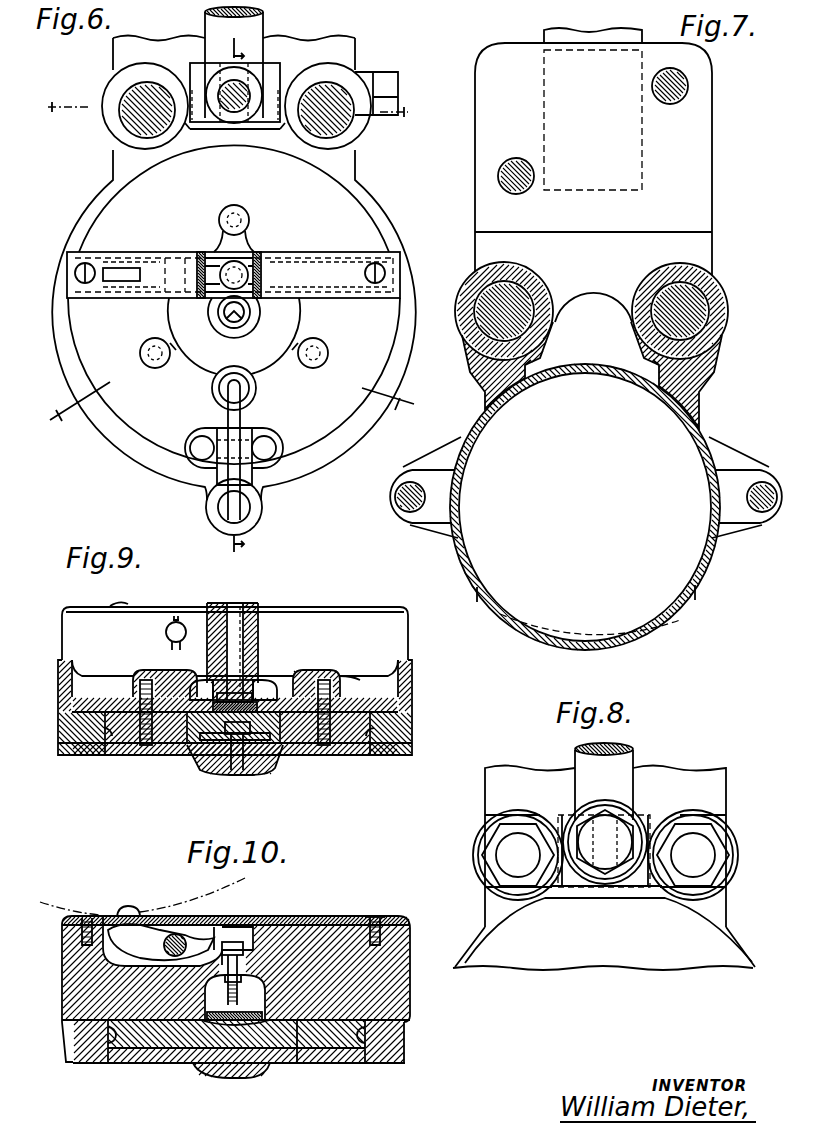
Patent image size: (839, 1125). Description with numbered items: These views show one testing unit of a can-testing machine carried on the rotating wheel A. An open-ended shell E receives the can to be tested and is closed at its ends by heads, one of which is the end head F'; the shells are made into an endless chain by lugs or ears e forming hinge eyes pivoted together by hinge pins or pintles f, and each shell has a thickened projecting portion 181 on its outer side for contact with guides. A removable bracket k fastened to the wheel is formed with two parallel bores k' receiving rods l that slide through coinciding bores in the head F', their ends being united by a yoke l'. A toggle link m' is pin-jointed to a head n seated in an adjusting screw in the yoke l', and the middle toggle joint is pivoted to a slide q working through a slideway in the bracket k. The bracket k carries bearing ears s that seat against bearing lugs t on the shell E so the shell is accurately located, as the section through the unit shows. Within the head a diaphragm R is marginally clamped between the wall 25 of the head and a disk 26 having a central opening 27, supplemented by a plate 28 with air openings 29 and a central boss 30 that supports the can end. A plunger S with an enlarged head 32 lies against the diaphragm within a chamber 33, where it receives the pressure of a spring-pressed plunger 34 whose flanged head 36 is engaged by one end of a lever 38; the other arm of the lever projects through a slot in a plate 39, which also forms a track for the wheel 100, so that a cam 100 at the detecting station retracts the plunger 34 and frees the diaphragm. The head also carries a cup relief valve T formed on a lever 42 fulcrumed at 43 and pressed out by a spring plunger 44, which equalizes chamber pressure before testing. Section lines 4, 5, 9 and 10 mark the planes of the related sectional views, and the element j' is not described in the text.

In FIG. 6, the slide q is at (210, 28).
In FIG. 8, the slide q is at (604, 781).
In FIG. 6, the section line 4 is at (236, 303).
In FIG. 6, the toggle link m' is at (240, 76).
In FIG. 6, the head n is at (243, 73).
In FIG. 6, the end head F' is at (233, 268).
In FIG. 9, the end head F' is at (235, 681).
In FIG. 10, the end head F' is at (246, 989).
In FIG. 8, the end head F' is at (604, 868).
In FIG. 6, the section line 5 is at (227, 110).
In FIG. 6, the rod l is at (133, 106).
In FIG. 7, the rod l is at (606, 311).
In FIG. 8, the rod l is at (605, 855).
In FIG. 6, the bore k' is at (336, 106).
In FIG. 7, the bore k' is at (686, 305).
In FIG. 7, the bracket k is at (508, 305).
In FIG. 6, the lever 38 is at (120, 270).
In FIG. 9, the lever 38 is at (141, 597).
In FIG. 10, the lever 38 is at (140, 916).
In FIG. 6, the spring-pressed plunger 34 is at (238, 268).
In FIG. 10, the spring-pressed plunger 34 is at (237, 940).
In FIG. 6, the plate 39 is at (330, 270).
In FIG. 10, the plate 39 is at (373, 917).
In FIG. 6, the section line 10 is at (73, 273).
In FIG. 6, the plunger S is at (233, 313).
In FIG. 9, the plunger S is at (243, 603).
In FIG. 6, the section line 9 is at (220, 408).
In FIG. 6, the lever 42 is at (226, 412).
In FIG. 6, the relief valve T is at (248, 391).
In FIG. 6, the fulcrum 43 is at (244, 454).
In FIG. 6, the spring plunger 44 is at (246, 509).
In FIG. 7, the wheel A is at (593, 151).
In FIG. 7, the bearing ear s is at (532, 362).
In FIG. 7, the bearing lug t is at (503, 372).
In FIG. 7, the open-ended shell E is at (585, 507).
In FIG. 7, the lug or ear e is at (398, 478).
In FIG. 7, the hinge pin or pintle f is at (422, 491).
In FIG. 7, the thickened projecting portion 181 is at (657, 624).
In FIG. 9, the enlarged head 32 is at (200, 698).
In FIG. 10, the enlarged head 32 is at (267, 990).
In FIG. 9, the chamber 33 is at (265, 688).
In FIG. 9, the diaphragm R is at (297, 708).
In FIG. 10, the diaphragm R is at (292, 1064).
In FIG. 9, the wall of the head 25 is at (368, 698).
In FIG. 9, the air opening 29 is at (196, 766).
In FIG. 9, the central opening 27 is at (238, 737).
In FIG. 9, the central boss 30 is at (273, 767).
In FIG. 10, the central boss 30 is at (257, 1077).
In FIG. 9, the plate 28 is at (297, 750).
In FIG. 9, the disk 26 is at (347, 735).
In FIG. 10, the disk 26 is at (342, 1040).
In FIG. 9, the flange j' is at (397, 765).
In FIG. 10, the flange j' is at (385, 1080).
In FIG. 10, the cam or wheel 100 is at (142, 896).
In FIG. 10, the flanged head 36 is at (227, 940).
In FIG. 8, the yoke l' is at (604, 864).